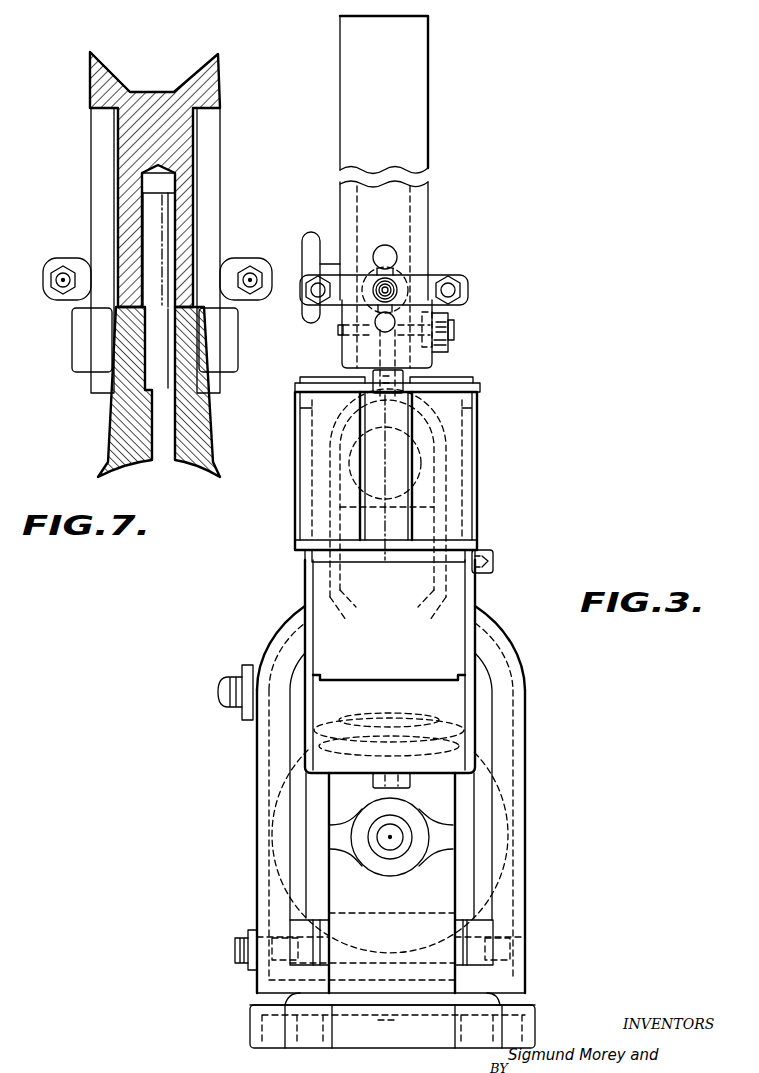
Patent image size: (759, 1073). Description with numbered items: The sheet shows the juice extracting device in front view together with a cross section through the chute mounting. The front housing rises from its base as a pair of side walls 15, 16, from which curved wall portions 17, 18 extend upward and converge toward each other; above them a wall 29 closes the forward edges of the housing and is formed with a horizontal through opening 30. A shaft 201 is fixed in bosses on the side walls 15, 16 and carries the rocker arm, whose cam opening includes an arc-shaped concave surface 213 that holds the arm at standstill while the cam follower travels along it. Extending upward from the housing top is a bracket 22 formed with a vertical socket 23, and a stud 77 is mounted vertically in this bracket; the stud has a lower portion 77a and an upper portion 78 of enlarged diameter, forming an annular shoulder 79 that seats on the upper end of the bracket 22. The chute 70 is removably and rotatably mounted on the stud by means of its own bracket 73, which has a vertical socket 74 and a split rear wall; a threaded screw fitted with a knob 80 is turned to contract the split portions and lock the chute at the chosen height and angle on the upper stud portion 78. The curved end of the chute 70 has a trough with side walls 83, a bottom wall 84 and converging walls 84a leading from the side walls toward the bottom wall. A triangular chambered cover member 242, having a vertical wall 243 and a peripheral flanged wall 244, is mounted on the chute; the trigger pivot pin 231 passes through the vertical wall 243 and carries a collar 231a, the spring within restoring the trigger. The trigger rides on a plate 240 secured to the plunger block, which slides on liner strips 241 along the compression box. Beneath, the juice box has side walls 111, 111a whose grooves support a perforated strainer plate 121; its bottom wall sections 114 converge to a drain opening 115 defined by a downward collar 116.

In FIG. 3, the side wall 15 is at (522, 884).
In FIG. 3, the side wall 16 is at (262, 870).
In FIG. 3, the curved wall portion 17 is at (505, 622).
In FIG. 3, the curved wall portion 18 is at (292, 641).
In FIG. 7, the bracket 22 is at (204, 428).
In FIG. 7, the socket 23 is at (163, 442).
In FIG. 3, the wall 29 is at (425, 505).
In FIG. 3, the through opening 30 is at (455, 472).
In FIG. 7, the chute 70 is at (246, 98).
In FIG. 3, the chute 70 is at (432, 95).
In FIG. 7, the bracket 73 is at (118, 208).
In FIG. 7, the socket 74 is at (178, 184).
In FIG. 7, the stud 77 is at (162, 397).
In FIG. 7, the lower portion of stud 77a is at (165, 332).
In FIG. 7, the upper portion of stud 78 is at (178, 225).
In FIG. 7, the annular shoulder 79 is at (120, 318).
In FIG. 3, the knob 80 is at (312, 232).
In FIG. 7, the side wall 83 is at (90, 56).
In FIG. 7, the bottom wall 84 is at (155, 91).
In FIG. 7, the converging wall 84a is at (127, 86).
In FIG. 3, the side wall 111 is at (305, 583).
In FIG. 3, the side wall 111a is at (478, 590).
In FIG. 3, the bottom wall section 114 is at (486, 748).
In FIG. 3, the drain opening 115 is at (415, 776).
In FIG. 3, the collar 116 is at (406, 790).
In FIG. 3, the perforated strainer plate 121 is at (455, 657).
In FIG. 3, the shaft 201 is at (235, 950).
In FIG. 3, the concave surface 213 is at (490, 552).
In FIG. 3, the pivot pin 231 is at (339, 331).
In FIG. 3, the collar 231a is at (452, 325).
In FIG. 3, the plate 240 is at (474, 378).
In FIG. 3, the liner strip 241 is at (481, 392).
In FIG. 3, the cover member 242 is at (447, 317).
In FIG. 3, the vertical wall 243 is at (454, 338).
In FIG. 3, the peripheral flanged wall 244 is at (448, 352).